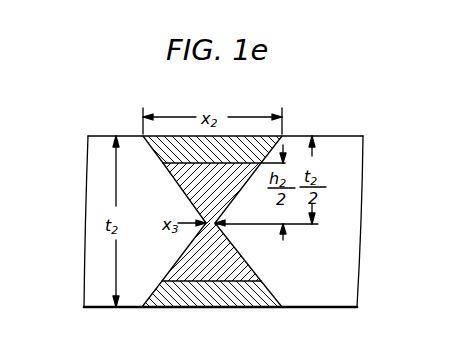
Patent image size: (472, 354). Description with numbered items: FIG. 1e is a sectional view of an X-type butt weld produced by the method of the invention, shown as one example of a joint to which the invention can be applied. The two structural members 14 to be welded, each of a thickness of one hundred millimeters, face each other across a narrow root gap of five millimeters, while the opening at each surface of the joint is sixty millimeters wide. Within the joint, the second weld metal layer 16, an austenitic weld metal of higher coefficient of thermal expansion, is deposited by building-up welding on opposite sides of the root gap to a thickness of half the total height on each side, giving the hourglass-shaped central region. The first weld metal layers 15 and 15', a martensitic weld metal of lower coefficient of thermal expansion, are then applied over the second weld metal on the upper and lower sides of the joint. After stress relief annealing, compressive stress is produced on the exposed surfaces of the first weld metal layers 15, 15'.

The structural member 14 is at (98, 296).
The first weld metal layer 15 is at (201, 129).
The first weld metal layer 15' is at (215, 288).
The second weld metal layer 16 is at (198, 253).